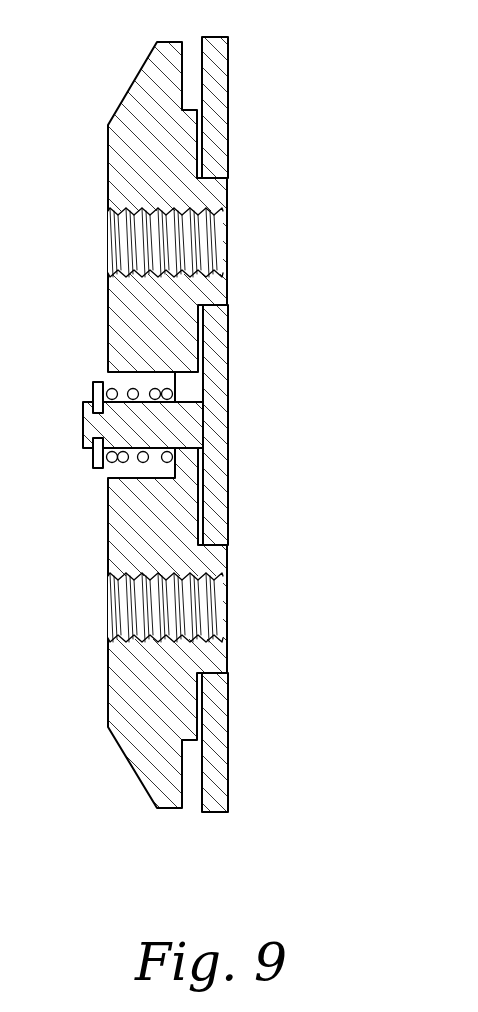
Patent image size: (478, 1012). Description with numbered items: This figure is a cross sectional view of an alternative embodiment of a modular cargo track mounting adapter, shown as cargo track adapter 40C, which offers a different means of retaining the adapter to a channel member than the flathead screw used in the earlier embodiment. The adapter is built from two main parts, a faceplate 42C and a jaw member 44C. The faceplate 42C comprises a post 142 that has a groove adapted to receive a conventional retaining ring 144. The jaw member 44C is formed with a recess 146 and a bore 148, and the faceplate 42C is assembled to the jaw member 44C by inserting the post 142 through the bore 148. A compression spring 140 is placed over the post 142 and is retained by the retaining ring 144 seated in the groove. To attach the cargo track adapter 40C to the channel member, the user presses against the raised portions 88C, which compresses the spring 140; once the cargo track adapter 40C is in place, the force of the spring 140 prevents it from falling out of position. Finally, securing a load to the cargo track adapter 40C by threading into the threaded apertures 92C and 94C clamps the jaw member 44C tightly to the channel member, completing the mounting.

The cargo track adapter 40C is at (326, 795).
The faceplate 42C is at (218, 77).
The jaw member 44C is at (136, 93).
The raised portions 88C is at (218, 289).
The threaded aperture 92C is at (215, 243).
The threaded aperture 94C is at (210, 608).
The compression spring 140 is at (132, 389).
The post 142 is at (85, 421).
The retaining ring 144 is at (98, 382).
The recess 146 is at (122, 470).
The bore 148 is at (187, 398).